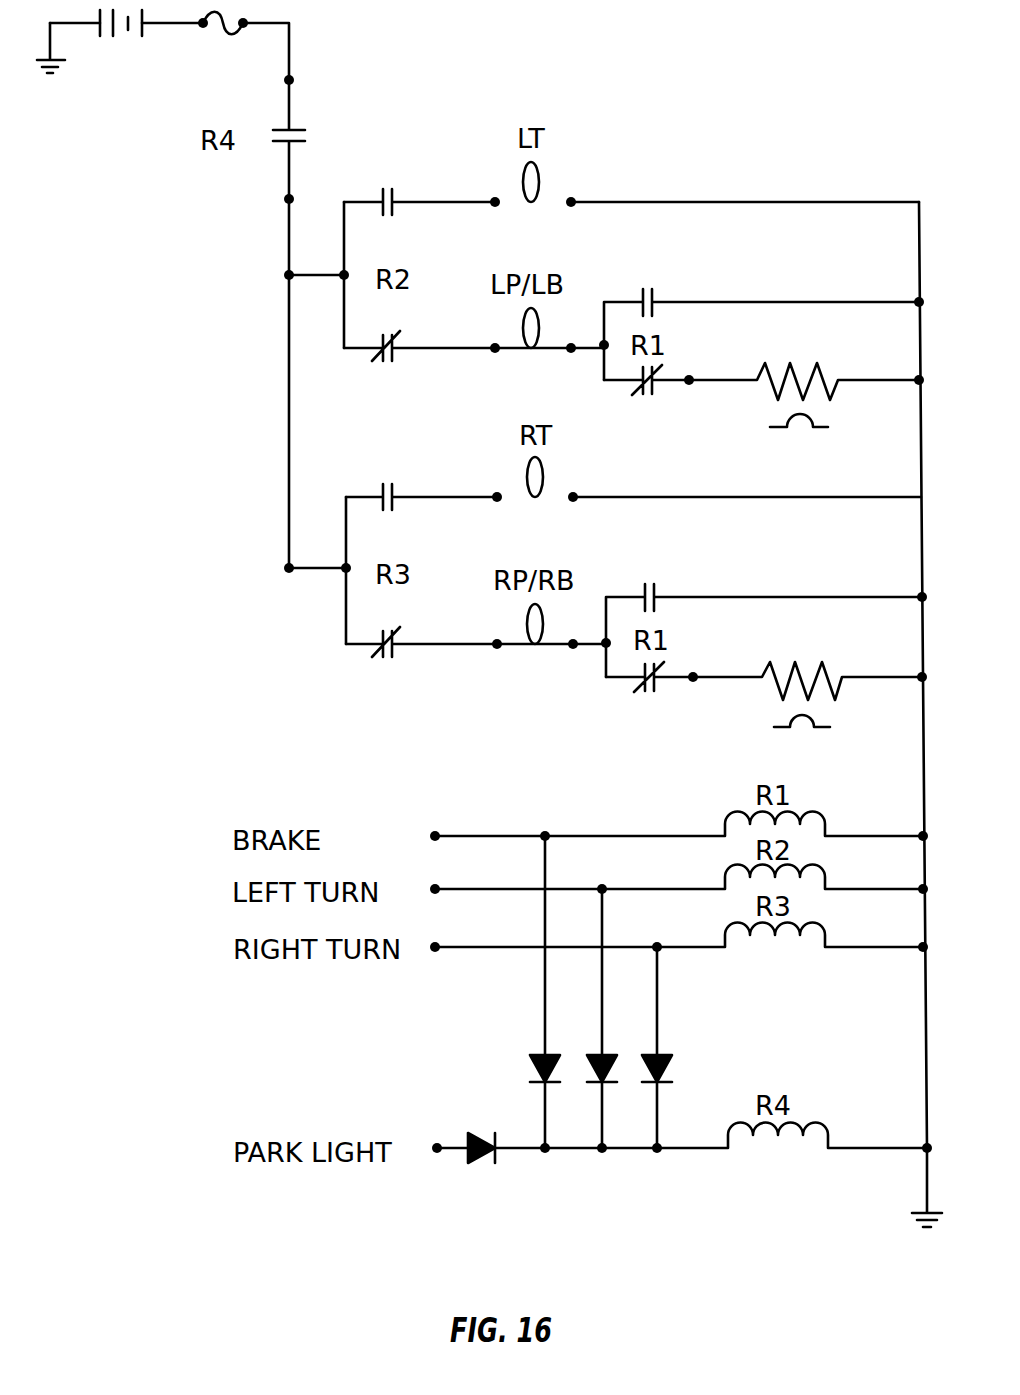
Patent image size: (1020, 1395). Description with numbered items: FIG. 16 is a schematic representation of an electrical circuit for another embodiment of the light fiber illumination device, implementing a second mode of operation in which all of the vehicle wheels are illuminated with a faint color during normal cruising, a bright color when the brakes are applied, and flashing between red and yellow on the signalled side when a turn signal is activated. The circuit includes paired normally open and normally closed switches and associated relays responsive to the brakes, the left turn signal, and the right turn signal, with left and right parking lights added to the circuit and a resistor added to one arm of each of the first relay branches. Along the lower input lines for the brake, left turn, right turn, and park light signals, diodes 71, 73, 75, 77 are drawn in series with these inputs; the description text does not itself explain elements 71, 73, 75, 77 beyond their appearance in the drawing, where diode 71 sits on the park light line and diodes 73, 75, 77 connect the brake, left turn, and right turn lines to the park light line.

The park light diode 71 is at (463, 1110).
The brake diode 73 is at (523, 992).
The left turn diode 75 is at (585, 1018).
The right turn diode 77 is at (684, 1047).